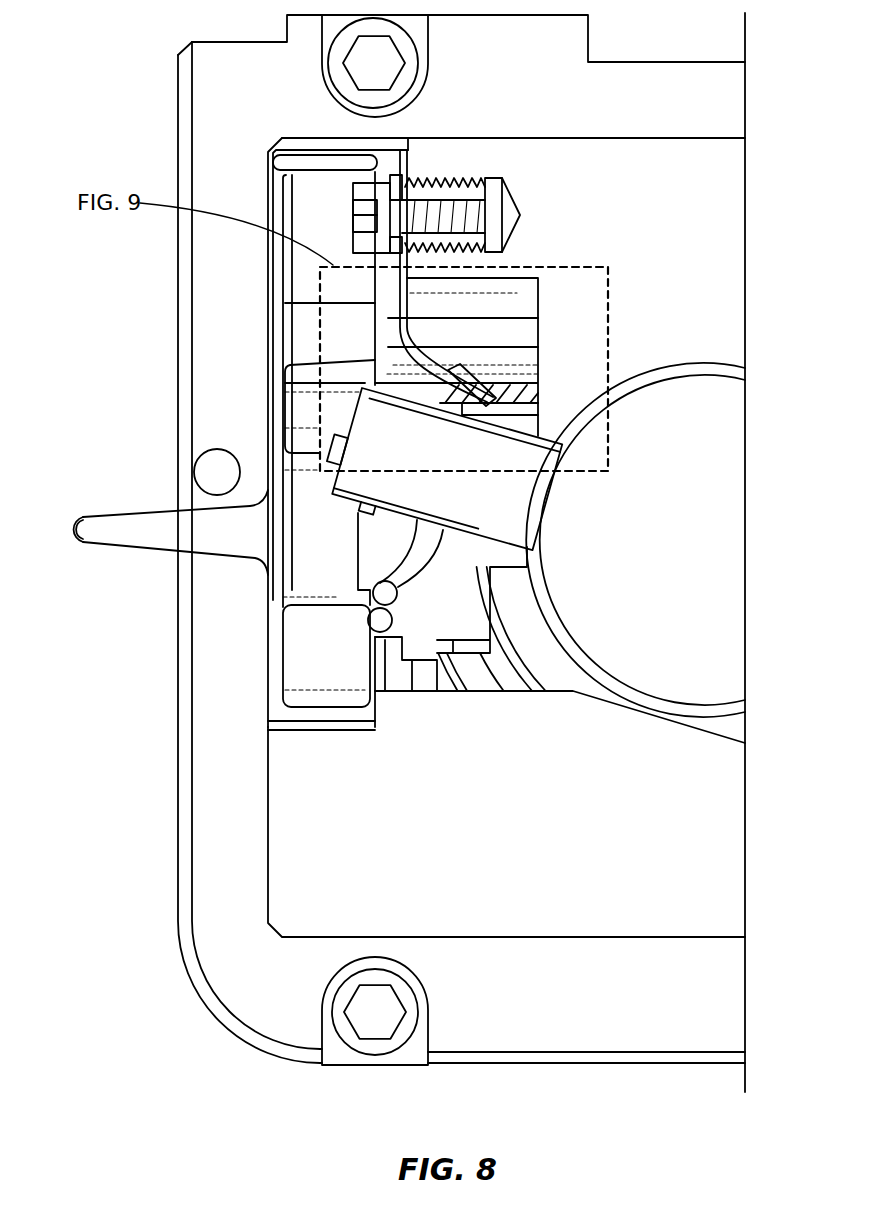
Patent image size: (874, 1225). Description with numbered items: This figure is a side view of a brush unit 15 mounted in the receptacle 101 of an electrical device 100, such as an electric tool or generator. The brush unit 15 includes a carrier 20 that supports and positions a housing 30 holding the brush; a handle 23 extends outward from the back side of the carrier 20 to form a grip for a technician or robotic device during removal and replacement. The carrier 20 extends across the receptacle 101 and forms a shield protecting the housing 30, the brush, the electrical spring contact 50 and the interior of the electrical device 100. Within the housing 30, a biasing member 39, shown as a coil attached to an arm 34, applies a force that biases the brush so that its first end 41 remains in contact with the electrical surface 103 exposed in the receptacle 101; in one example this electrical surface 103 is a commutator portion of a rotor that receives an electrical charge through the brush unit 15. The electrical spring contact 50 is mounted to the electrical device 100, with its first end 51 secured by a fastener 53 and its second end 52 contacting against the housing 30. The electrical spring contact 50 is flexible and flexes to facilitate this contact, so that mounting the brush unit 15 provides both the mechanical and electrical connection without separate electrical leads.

The brush unit 15 is at (178, 353).
The carrier 20 is at (275, 642).
The handle 23 is at (112, 530).
The housing 30 is at (522, 423).
The arm 34 is at (550, 400).
The biasing member 39 is at (325, 445).
The first end 41 is at (552, 497).
The electrical spring contact 50 is at (403, 302).
The first end 51 is at (405, 185).
The second end 52 is at (513, 407).
The fastener 53 is at (368, 188).
The electrical device 100 is at (715, 885).
The receptacle 101 is at (318, 737).
The electrical surface 103 is at (640, 683).